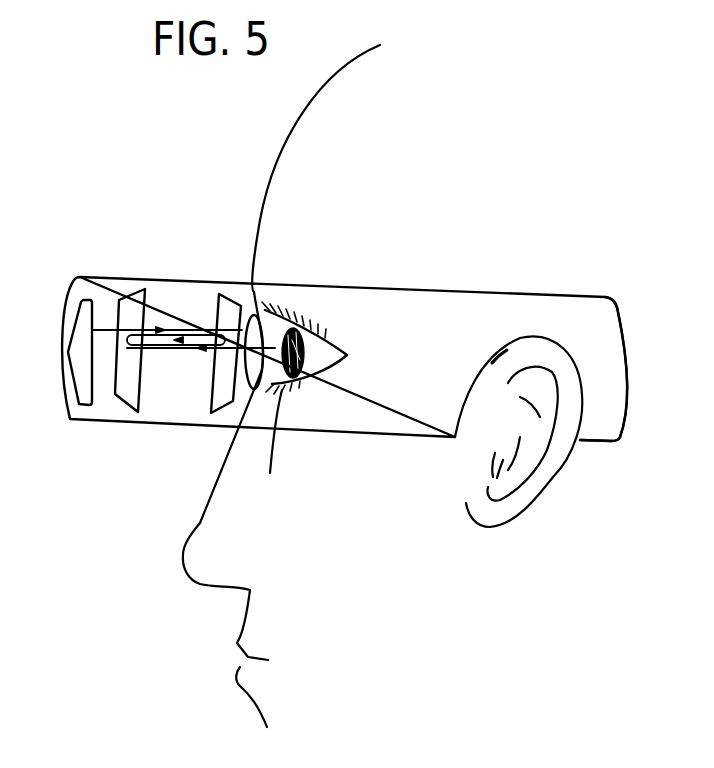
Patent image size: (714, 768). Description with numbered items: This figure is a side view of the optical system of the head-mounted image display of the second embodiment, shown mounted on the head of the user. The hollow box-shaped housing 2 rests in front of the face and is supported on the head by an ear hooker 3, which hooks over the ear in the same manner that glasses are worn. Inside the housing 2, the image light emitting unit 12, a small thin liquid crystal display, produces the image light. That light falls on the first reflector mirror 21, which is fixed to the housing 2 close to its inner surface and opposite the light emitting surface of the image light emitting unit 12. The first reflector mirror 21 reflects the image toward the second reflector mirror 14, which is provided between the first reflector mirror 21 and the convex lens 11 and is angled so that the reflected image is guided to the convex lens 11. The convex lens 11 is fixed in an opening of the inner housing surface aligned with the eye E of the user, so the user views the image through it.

The housing 2 is at (168, 420).
The ear hooker 3 is at (482, 328).
The convex lens 11 is at (267, 316).
The image light emitting unit 12 is at (75, 358).
The second reflector mirror 14 is at (128, 300).
The first reflector mirror 21 is at (220, 290).
The eye E is at (318, 333).